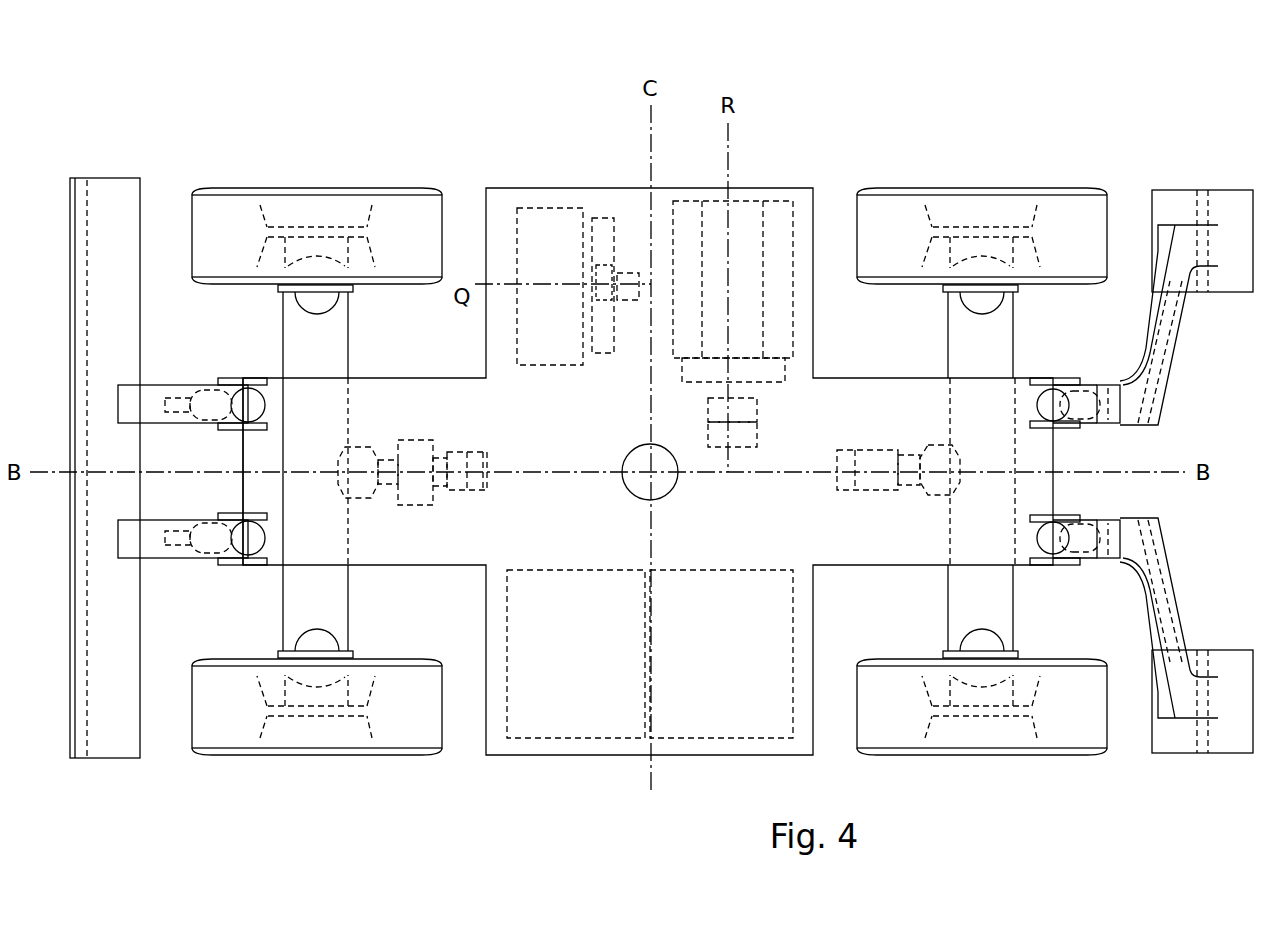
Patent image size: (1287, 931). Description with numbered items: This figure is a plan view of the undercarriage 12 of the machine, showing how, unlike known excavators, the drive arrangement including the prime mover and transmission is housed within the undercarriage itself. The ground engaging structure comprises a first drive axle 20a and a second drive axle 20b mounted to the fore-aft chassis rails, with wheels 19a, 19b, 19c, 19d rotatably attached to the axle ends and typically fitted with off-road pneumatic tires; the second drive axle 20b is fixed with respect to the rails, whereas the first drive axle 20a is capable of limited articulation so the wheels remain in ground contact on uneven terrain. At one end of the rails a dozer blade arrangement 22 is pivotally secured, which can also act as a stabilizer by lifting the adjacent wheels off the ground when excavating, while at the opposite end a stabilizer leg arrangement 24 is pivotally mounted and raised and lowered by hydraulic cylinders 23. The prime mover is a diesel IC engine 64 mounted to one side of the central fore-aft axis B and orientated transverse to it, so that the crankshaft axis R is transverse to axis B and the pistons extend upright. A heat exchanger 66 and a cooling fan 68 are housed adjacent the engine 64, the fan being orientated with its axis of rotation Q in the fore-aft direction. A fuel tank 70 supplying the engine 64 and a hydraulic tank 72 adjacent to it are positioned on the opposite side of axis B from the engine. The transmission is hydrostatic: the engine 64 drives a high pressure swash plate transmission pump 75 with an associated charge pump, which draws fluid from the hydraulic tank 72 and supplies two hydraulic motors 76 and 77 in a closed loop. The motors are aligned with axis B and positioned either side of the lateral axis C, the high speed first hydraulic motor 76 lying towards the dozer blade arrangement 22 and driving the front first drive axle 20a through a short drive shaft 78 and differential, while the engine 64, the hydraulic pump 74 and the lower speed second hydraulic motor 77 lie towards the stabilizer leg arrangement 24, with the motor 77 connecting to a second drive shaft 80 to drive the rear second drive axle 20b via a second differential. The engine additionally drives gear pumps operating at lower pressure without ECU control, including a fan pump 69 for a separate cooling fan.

The undercarriage 12 is at (845, 190).
The wheel 19a is at (236, 695).
The wheel 19b is at (238, 248).
The wheel 19c is at (1053, 248).
The wheel 19d is at (1055, 697).
The first drive axle 20a is at (317, 592).
The second drive axle 20b is at (978, 592).
The dozer blade arrangement 22 is at (100, 158).
The hydraulic cylinders 23 is at (1170, 353).
The stabilizer leg arrangement 24 is at (1188, 168).
The diesel IC engine 64 is at (733, 291).
The heat exchanger 66 is at (547, 257).
The cooling fan 68 is at (600, 255).
The fan pump 69 is at (628, 272).
The fuel tank 70 is at (721, 654).
The hydraulic tank 72 is at (576, 654).
The hydraulic pump 74 is at (740, 403).
The hydraulic transmission pump 75 is at (737, 442).
The first hydraulic motor 76 is at (463, 488).
The second hydraulic motor 77 is at (857, 483).
The short drive shaft 78 is at (380, 483).
The second drive shaft 80 is at (905, 477).